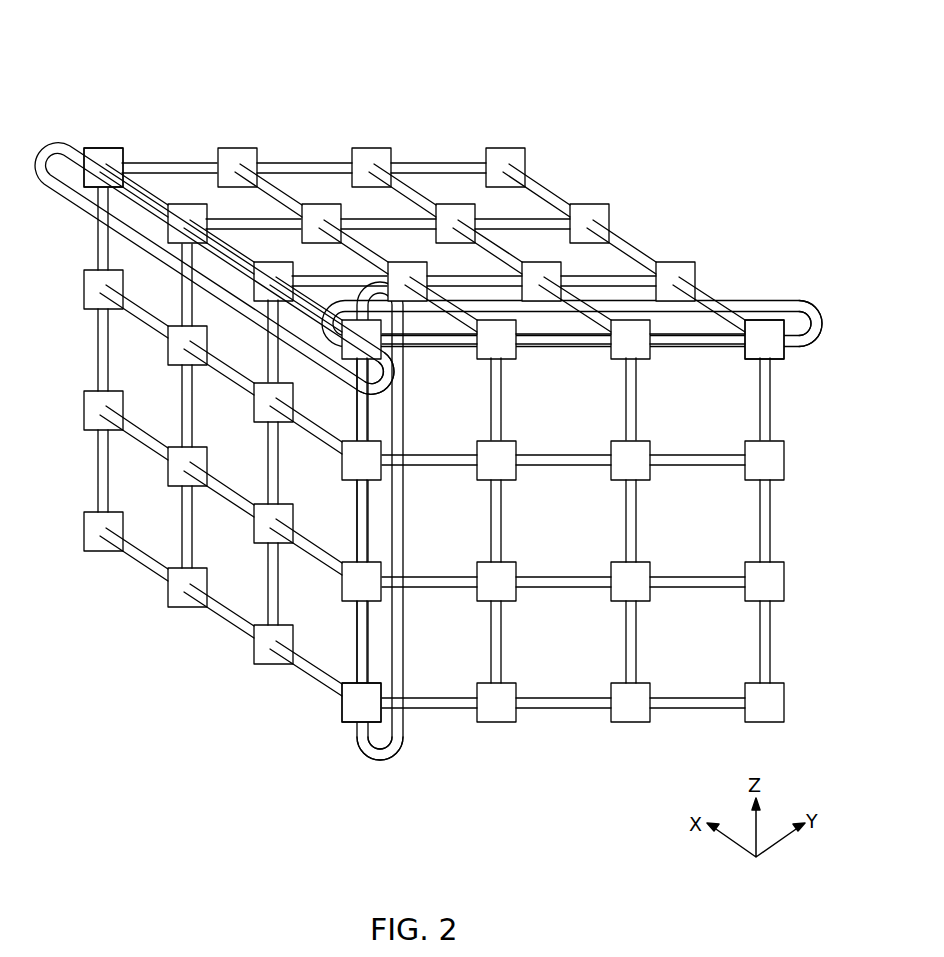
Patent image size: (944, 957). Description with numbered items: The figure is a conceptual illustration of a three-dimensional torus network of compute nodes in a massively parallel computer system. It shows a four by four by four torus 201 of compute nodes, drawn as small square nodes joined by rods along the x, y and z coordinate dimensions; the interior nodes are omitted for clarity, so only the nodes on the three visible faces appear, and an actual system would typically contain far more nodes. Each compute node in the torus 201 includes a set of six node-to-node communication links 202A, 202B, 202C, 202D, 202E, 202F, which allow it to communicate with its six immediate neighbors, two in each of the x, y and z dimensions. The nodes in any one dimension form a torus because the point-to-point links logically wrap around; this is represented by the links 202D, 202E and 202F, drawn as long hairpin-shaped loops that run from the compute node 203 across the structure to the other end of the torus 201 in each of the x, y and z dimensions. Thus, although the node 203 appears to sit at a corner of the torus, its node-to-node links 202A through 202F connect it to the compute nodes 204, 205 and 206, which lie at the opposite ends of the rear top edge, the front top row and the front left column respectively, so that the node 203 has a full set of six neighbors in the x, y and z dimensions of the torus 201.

The torus 201 is at (566, 81).
The node-to-node communication link 202A is at (428, 345).
The node-to-node communication link 202B is at (368, 418).
The node-to-node communication link 202C is at (318, 304).
The node-to-node communication link 202D is at (783, 300).
The node-to-node communication link 202E is at (378, 760).
The node-to-node communication link 202F is at (55, 145).
The compute node 203 is at (345, 348).
The compute node 204 is at (102, 158).
The compute node 205 is at (768, 347).
The compute node 206 is at (352, 708).